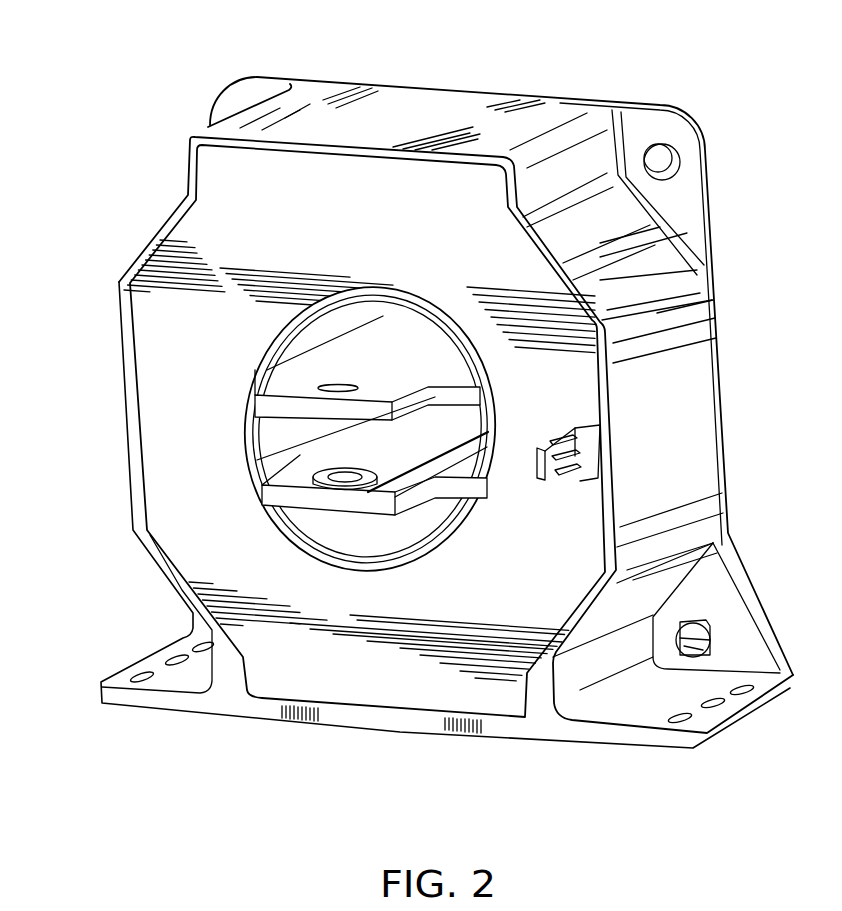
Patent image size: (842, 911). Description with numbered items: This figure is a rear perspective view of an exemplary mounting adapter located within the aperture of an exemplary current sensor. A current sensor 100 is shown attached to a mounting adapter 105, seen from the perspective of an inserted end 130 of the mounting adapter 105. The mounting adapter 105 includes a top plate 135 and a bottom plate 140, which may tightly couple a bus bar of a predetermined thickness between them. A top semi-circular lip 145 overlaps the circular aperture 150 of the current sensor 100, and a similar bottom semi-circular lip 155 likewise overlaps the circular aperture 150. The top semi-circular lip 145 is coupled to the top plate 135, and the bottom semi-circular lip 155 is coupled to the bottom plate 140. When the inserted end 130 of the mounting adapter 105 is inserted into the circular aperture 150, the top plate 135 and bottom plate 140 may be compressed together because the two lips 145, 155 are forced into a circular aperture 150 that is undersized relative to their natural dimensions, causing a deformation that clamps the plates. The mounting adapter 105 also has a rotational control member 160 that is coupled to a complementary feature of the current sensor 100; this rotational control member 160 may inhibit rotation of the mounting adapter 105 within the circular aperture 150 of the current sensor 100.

The current sensor 100 is at (393, 112).
The mounting adapter 105 is at (373, 545).
The inserted end 130 is at (290, 375).
The top plate 135 is at (399, 368).
The bottom plate 140 is at (410, 453).
The top semi-circular lip 145 is at (287, 330).
The circular aperture 150 is at (273, 437).
The bottom semi-circular lip 155 is at (400, 558).
The rotational control member 160 is at (697, 652).